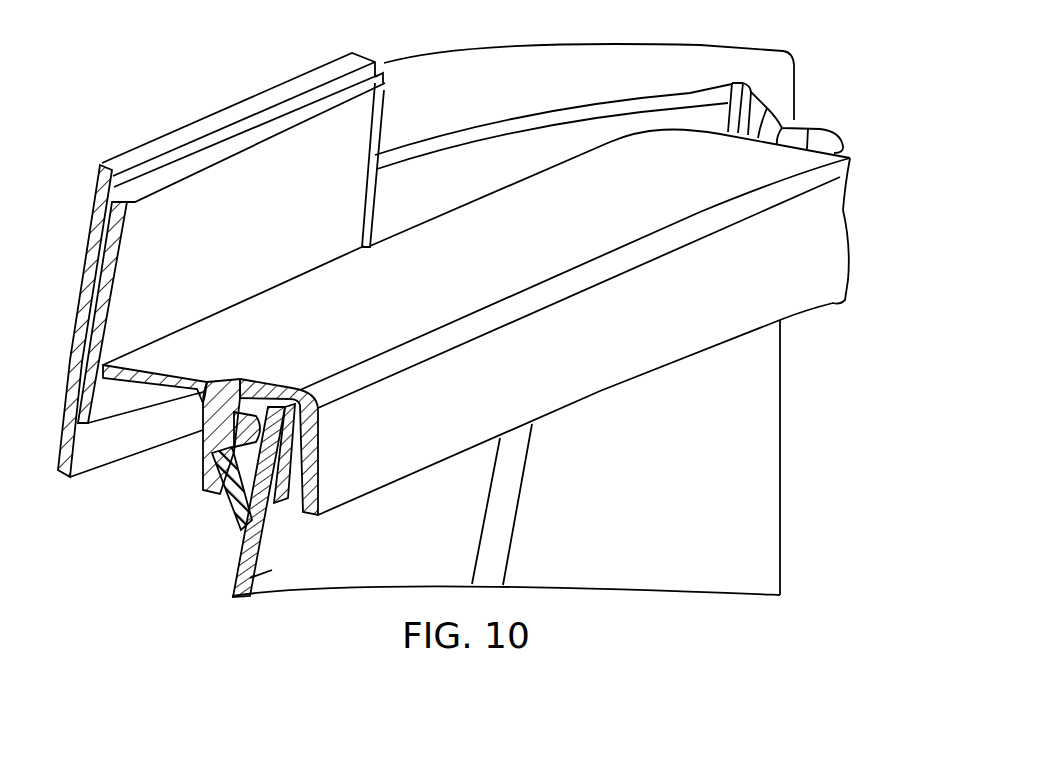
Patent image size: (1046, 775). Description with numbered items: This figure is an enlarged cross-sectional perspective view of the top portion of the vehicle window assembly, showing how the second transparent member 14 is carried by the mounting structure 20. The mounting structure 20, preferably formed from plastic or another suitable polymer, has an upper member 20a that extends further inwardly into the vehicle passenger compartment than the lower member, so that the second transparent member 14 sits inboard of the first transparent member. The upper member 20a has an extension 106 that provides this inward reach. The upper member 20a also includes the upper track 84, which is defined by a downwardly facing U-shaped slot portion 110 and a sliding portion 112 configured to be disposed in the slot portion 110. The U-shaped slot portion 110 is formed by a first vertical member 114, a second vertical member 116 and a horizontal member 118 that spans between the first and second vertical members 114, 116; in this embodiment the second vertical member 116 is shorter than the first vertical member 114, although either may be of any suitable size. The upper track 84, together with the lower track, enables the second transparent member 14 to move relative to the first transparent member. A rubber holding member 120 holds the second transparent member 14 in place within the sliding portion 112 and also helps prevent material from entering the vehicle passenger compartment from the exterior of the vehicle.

The mounting structure 20 is at (851, 211).
The upper member 20a is at (812, 282).
The extension 106 is at (168, 376).
The U-shaped slot portion 110 is at (264, 382).
The sliding portion 112 is at (288, 503).
The first vertical member 114 is at (312, 461).
The second vertical member 116 is at (215, 427).
The horizontal member 118 is at (297, 392).
The rubber holding member 120 is at (226, 507).
The upper track 84 is at (308, 430).
The second transparent member 14 is at (233, 585).